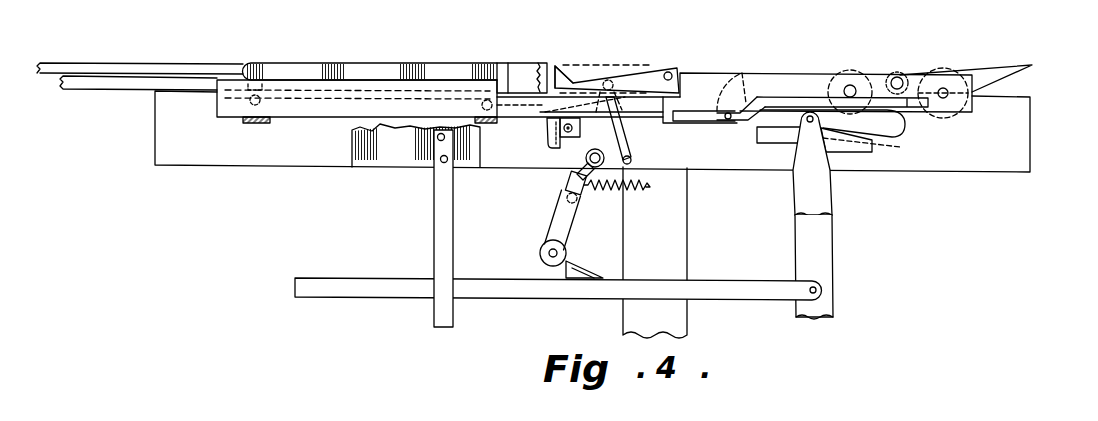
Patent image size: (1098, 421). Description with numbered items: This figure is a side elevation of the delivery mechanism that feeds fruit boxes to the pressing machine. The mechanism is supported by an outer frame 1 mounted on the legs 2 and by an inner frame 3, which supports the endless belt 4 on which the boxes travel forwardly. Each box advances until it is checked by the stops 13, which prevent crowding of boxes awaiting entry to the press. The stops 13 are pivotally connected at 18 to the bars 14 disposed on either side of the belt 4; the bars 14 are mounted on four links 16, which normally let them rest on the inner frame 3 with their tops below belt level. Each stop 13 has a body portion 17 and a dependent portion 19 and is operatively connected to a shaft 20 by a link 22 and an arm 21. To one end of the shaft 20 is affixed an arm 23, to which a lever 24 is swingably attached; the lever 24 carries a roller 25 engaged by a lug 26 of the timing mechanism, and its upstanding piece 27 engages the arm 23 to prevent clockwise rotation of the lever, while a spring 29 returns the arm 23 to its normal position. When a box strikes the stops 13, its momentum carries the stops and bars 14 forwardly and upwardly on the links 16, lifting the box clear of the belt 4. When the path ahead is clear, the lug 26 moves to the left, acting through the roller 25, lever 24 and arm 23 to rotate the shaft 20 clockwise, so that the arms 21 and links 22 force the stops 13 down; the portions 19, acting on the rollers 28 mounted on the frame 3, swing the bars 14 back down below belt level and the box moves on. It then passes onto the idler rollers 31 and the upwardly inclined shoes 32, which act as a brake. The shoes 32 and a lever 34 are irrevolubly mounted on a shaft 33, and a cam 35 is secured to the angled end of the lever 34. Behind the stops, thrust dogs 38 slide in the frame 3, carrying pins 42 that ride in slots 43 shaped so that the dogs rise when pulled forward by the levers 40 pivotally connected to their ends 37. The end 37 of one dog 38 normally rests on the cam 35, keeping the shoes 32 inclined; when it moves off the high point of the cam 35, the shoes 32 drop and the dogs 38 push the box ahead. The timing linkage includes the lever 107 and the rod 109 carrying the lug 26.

The outer frame 1 is at (208, 170).
The legs 2 is at (684, 255).
The inner frame 3 is at (290, 106).
The endless belt 4 is at (108, 68).
The stops 13 is at (558, 68).
The bars 14 is at (442, 64).
The links 16 is at (217, 99).
The body portion 17 is at (645, 68).
The pivot 18 is at (671, 73).
The dependent portion 19 is at (547, 131).
The shaft 20 is at (596, 149).
The arm 21 is at (633, 160).
The link 22 is at (626, 134).
The arm 23 is at (586, 164).
The lever 24 is at (556, 224).
The roller 25 is at (541, 258).
The lug 26 is at (590, 271).
The upstanding piece 27 is at (566, 181).
The rollers 28 is at (545, 104).
The spring 29 is at (638, 192).
The idler rollers 31 is at (851, 68).
The shoes 32 is at (1036, 67).
The shaft 33 is at (898, 76).
The lever 34 is at (897, 137).
The cam 35 is at (852, 145).
The end 37 is at (786, 136).
The thrust dogs 38 is at (747, 73).
The levers 40 is at (822, 191).
The pins 42 is at (728, 121).
The slots 43 is at (690, 121).
The lever 107 is at (834, 258).
The rod 109 is at (755, 299).